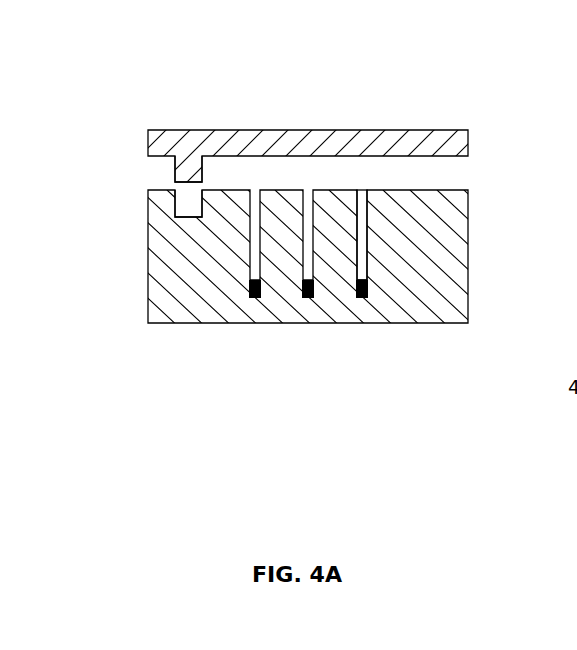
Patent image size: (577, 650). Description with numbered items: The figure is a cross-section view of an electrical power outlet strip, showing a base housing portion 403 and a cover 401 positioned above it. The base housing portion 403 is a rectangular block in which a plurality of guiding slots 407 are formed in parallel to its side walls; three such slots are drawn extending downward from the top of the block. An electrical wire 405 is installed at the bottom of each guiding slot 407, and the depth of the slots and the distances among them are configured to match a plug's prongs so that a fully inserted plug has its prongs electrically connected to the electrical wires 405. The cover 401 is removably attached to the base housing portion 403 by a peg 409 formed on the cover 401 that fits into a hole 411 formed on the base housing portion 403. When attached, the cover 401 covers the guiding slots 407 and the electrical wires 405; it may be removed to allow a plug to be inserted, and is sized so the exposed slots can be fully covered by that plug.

The cover 401 is at (181, 127).
The base housing portion 403 is at (444, 248).
The electrical wire 405 is at (372, 302).
The guiding slots 407 is at (359, 206).
The peg 409 is at (168, 178).
The hole 411 is at (196, 218).